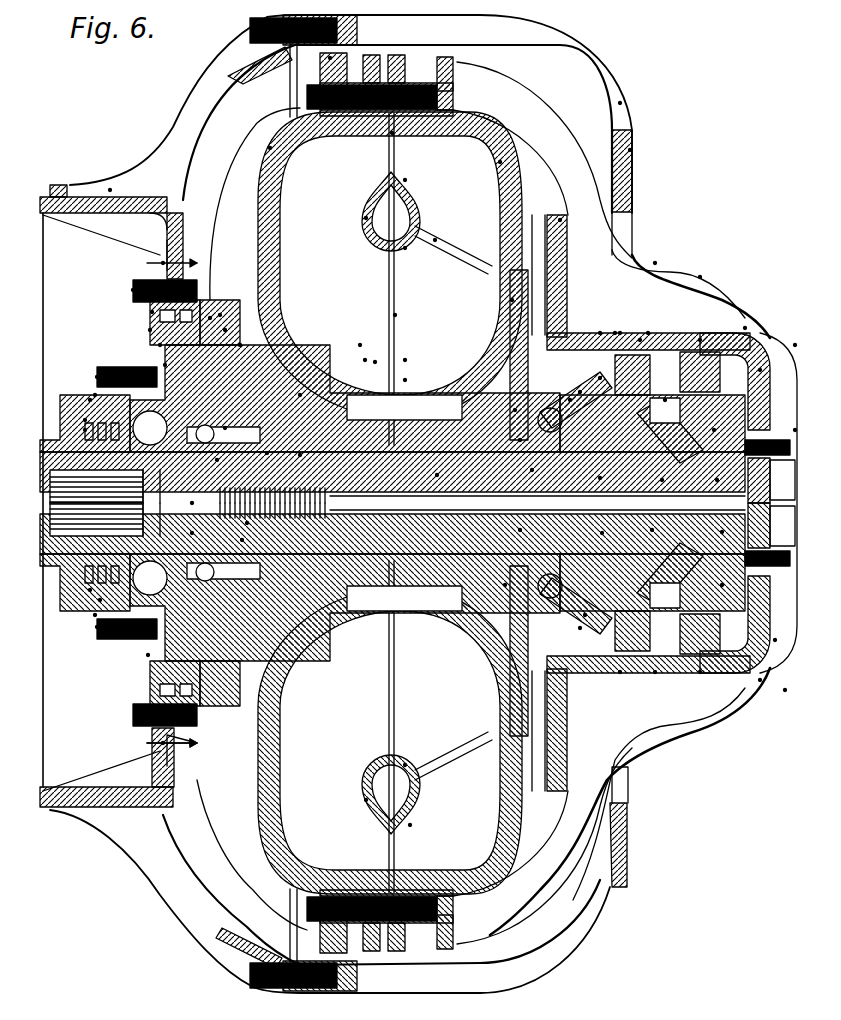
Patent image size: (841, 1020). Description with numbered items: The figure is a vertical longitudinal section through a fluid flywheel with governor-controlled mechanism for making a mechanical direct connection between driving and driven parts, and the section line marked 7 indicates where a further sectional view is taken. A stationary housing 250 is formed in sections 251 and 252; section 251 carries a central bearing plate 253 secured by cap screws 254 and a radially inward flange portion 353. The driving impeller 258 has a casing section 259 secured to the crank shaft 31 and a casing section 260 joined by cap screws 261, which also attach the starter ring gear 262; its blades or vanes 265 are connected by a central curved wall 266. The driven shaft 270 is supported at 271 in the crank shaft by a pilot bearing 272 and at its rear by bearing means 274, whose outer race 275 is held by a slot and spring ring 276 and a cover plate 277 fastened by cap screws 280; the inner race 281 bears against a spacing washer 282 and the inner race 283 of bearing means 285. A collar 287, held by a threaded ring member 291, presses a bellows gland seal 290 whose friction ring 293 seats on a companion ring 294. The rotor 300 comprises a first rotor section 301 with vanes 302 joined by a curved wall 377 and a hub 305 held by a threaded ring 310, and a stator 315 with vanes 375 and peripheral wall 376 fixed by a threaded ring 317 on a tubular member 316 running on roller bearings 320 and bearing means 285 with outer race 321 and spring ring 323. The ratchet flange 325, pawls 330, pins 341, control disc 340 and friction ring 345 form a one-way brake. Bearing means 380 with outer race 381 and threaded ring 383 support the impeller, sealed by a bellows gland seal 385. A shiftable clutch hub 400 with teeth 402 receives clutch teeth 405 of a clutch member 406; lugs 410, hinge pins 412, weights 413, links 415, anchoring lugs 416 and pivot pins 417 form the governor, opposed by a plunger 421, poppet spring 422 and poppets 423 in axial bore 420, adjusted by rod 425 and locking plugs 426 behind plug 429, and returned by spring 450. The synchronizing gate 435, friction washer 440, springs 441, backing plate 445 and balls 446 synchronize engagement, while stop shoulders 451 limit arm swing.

The starter ring gear 262 is at (330, 58).
The cap screws 261 is at (310, 97).
The casing section 260 is at (270, 148).
The rotor blades or vanes 302 is at (392, 133).
The housing section 251 is at (110, 190).
The housing section 252 is at (620, 103).
The stationary supporting casing or housing 250 is at (630, 150).
The rotor 300 is at (560, 220).
The central curved wall 266 is at (366, 218).
The curved wall 377 is at (405, 180).
The first rotor section 301 is at (500, 162).
The stator blades or vanes 375 is at (435, 240).
The curved peripheral wall 376 is at (405, 248).
The driving impeller 258 is at (655, 263).
The casing section 259 is at (700, 277).
The cap screws 254 is at (133, 290).
The pins 341 is at (210, 318).
The pawls 330 is at (152, 312).
The ratchet flange 325 is at (150, 330).
The cap screws 280 is at (95, 395).
The central bearing plate 253 is at (160, 345).
The slot and spring ring 276 is at (165, 365).
The bellows gland seal 290 is at (90, 400).
The cover plate 277 is at (97, 377).
The companion ring 294 is at (85, 420).
The friction ring 293 is at (85, 430).
The cam ring or control disc 340 is at (220, 315).
The friction ring 345 is at (225, 330).
The radially inwardly disposed flange portion 353 is at (240, 345).
The impeller blades or vanes 265 is at (395, 315).
The threaded ring 383 is at (360, 345).
The outer bearing race 381 is at (365, 360).
The bearing means 380 is at (380, 350).
The sleeve or tubular member 316 is at (405, 360).
The roller bearings 320 is at (405, 380).
The second rotor section (stator) 315 is at (512, 300).
The backing plate 445 is at (615, 333).
The anti-friction balls 446 is at (620, 333).
The friction washer 440 is at (648, 333).
The springs 441 is at (600, 333).
The synchronizing gate 435 is at (640, 340).
The clutch teeth 405 is at (745, 328).
The teeth 402 is at (795, 345).
The shiftable clutch hub 400 is at (760, 370).
The weights 413 is at (600, 378).
The links 415 is at (580, 392).
The anchoring lugs 416 is at (570, 400).
The threaded ring 317 is at (515, 410).
The driven shaft 270 is at (520, 440).
The lugs 410 is at (665, 400).
The poppets 423 is at (717, 481).
The support location 271 is at (795, 430).
The bellows gland seal 385 is at (300, 395).
The bearing means 285 is at (225, 428).
The spacing washer 282 is at (216, 460).
The inner race 283 is at (266, 453).
The locking plugs 426 is at (299, 455).
The rod 425 is at (436, 475).
The threaded ring 310 is at (531, 470).
The hinge pins 412 is at (661, 480).
The axial bore 420 is at (716, 480).
The plug 429 is at (191, 503).
The inner race 281 is at (191, 533).
The spring ring 323 is at (246, 523).
The outer race 321 is at (241, 540).
The pivot pins 417 is at (519, 530).
The poppet spring 422 is at (601, 533).
The poppet plunger 421 is at (651, 530).
The spring 450 is at (721, 585).
The threaded ring member 291 is at (90, 590).
The collar 287 is at (97, 627).
The bearing means 274 is at (100, 600).
The outer race 275 is at (148, 655).
The hub 305 is at (505, 585).
The stop shoulders 451 is at (620, 672).
The pilot bearing 272 is at (760, 680).
The housing cover 406 is at (785, 690).
The crank shaft 31 is at (775, 640).
The section line 7 is at (141, 504).